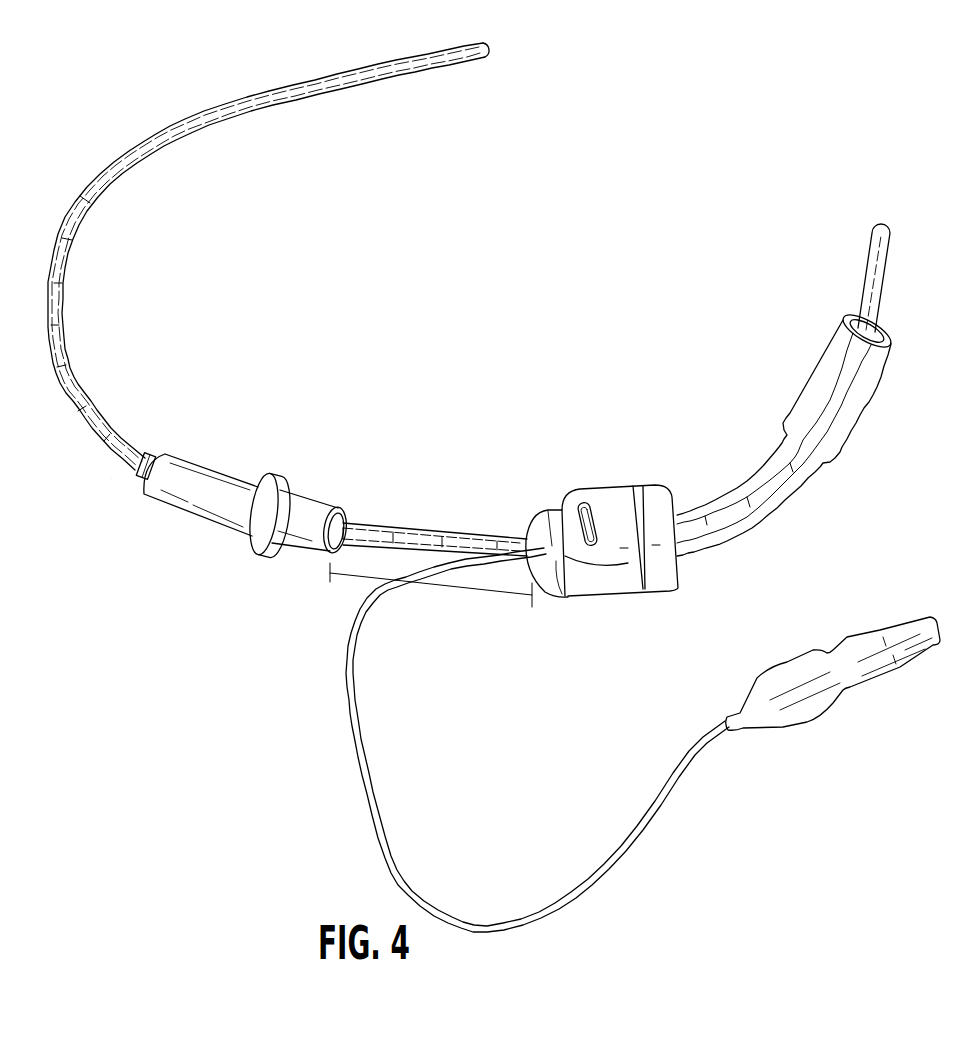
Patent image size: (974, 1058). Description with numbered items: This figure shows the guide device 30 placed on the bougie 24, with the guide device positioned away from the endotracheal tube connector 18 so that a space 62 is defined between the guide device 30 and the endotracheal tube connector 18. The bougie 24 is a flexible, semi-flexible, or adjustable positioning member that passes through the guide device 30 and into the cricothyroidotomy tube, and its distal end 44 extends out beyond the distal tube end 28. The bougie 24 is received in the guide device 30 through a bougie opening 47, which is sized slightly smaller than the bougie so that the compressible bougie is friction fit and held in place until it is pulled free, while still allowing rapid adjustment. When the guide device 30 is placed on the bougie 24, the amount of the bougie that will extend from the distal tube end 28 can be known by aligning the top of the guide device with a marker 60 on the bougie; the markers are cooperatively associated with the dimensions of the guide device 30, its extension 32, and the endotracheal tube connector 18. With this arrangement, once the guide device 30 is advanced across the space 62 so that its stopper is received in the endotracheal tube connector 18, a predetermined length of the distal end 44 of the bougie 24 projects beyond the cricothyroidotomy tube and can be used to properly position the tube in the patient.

The bougie 24 is at (100, 203).
The marker 60 is at (145, 459).
The bougie opening 47 is at (114, 478).
The guide device 30 is at (207, 510).
The extension 32 is at (312, 537).
The space 62 is at (337, 579).
The endotracheal tube connector 18 is at (557, 583).
The distal tube end 28 is at (894, 333).
The distal end of the bougie 44 is at (890, 233).